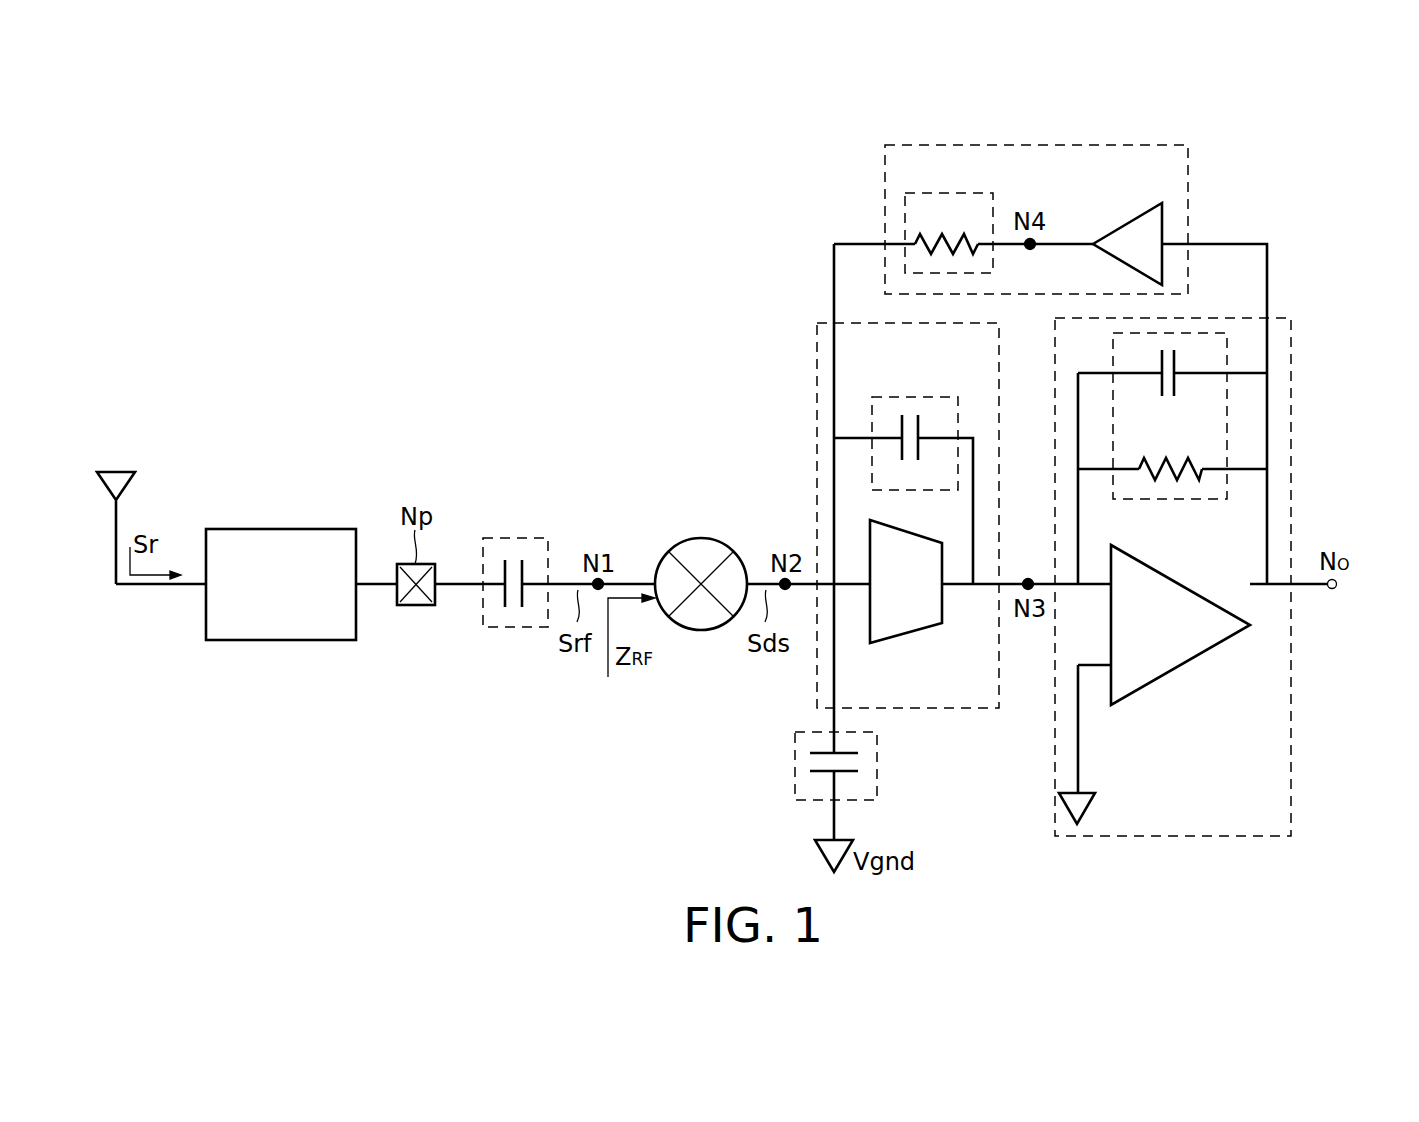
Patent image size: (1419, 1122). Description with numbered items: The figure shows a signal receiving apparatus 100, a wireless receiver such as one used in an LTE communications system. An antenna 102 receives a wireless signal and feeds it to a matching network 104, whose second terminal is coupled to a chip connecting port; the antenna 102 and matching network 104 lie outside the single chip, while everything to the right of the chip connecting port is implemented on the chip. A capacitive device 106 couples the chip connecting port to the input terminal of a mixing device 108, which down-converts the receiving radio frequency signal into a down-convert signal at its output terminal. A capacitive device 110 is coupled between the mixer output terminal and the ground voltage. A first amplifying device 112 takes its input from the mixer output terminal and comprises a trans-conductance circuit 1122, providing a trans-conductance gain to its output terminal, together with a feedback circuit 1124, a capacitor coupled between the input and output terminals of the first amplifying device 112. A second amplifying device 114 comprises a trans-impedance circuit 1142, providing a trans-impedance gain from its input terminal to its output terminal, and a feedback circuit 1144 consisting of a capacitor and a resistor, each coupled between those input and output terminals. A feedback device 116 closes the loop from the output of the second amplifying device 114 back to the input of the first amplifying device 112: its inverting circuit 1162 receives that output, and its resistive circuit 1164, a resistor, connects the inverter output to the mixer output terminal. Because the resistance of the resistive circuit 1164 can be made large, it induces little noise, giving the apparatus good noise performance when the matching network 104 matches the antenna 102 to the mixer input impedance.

The signal receiving apparatus 100 is at (1305, 170).
The antenna 102 is at (114, 470).
The matching network 104 is at (279, 529).
The capacitive device 106 is at (514, 538).
The mixing device 108 is at (700, 538).
The capacitive device 110 is at (795, 763).
The first amplifying device 112 is at (817, 364).
The second amplifying device 114 is at (1291, 365).
The feedback device 116 is at (1188, 185).
The trans-conductance circuit 1122 is at (915, 633).
The feedback circuit 1124 is at (913, 397).
The trans-impedance circuit 1142 is at (1181, 667).
The feedback circuit 1144 is at (1183, 501).
The inverting circuit 1162 is at (1119, 230).
The resistive circuit 1164 is at (948, 193).